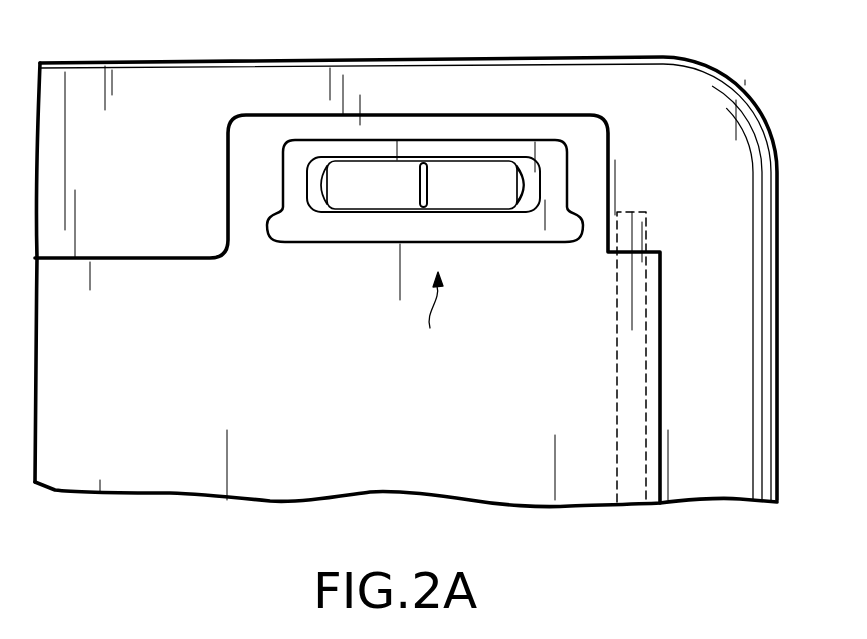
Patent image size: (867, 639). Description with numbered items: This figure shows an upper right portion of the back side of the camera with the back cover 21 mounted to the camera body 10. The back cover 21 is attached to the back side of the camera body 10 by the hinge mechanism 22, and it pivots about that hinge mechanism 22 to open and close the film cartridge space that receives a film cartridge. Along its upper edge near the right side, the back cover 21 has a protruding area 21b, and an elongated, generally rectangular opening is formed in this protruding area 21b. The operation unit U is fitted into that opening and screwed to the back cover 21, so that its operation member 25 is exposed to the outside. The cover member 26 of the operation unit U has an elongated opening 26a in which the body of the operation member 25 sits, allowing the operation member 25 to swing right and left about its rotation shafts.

The camera body 10 is at (172, 88).
The back cover 21 is at (143, 470).
The protruding area 21b is at (242, 187).
The hinge mechanism 22 is at (641, 228).
The operation member 25 is at (455, 170).
The cover member 26 is at (303, 150).
The elongated opening 26a is at (534, 183).
The operation unit U is at (444, 311).